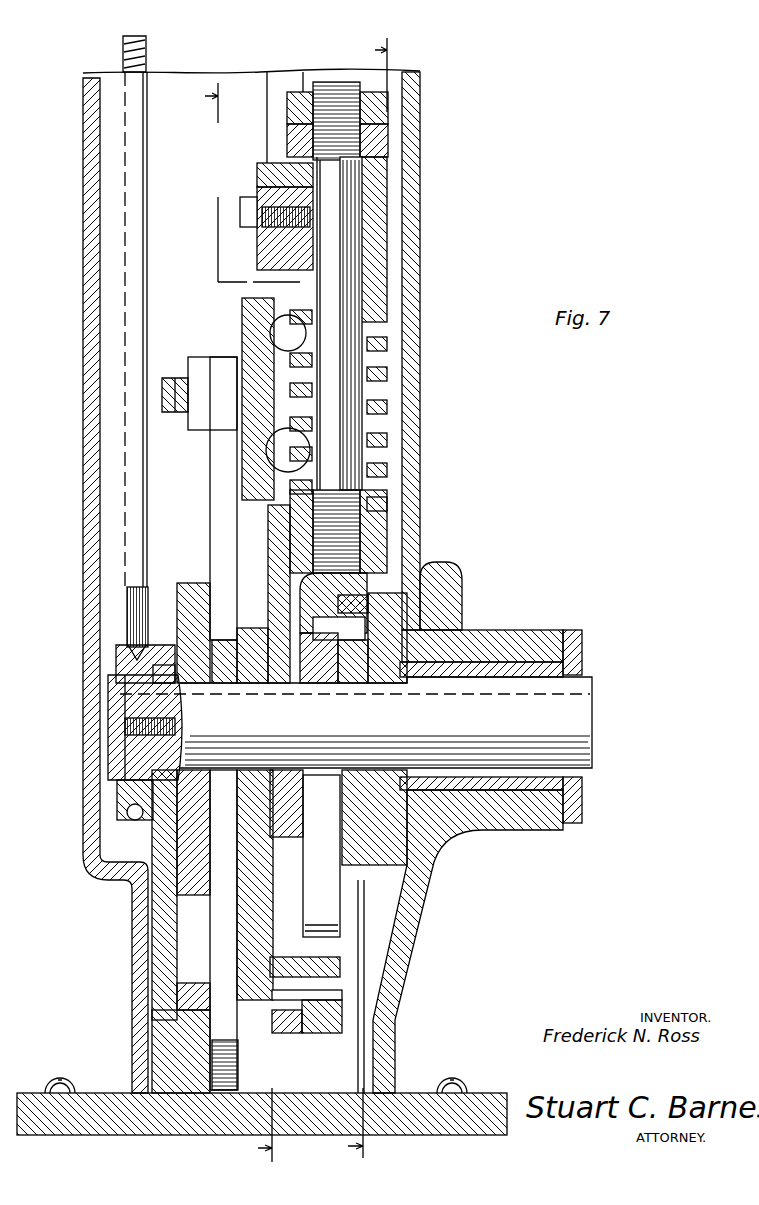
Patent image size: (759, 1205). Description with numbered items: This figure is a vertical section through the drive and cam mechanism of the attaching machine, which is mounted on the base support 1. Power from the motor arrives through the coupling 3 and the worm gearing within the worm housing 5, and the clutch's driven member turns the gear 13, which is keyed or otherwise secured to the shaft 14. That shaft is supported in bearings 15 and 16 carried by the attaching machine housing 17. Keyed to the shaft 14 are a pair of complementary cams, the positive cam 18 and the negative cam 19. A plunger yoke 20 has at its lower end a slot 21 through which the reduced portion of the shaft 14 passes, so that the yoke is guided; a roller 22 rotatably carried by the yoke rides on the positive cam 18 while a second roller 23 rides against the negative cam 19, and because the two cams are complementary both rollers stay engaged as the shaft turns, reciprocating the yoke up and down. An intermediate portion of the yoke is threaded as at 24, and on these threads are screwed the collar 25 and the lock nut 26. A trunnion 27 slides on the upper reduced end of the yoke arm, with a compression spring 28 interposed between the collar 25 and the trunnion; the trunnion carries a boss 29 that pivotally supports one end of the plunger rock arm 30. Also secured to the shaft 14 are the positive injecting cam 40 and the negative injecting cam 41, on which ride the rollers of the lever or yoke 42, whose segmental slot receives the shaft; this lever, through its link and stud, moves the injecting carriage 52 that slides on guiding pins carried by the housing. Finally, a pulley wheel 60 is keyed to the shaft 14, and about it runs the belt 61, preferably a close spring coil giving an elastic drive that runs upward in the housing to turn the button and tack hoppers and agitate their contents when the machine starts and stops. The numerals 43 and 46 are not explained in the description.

The base support 1 is at (485, 1091).
The coupling 3 is at (379, 599).
The worm housing 5 is at (252, 622).
The gear 13 is at (438, 882).
The shaft 14 is at (565, 720).
The bearing 15 is at (478, 646).
The bearing 16 is at (160, 663).
The attaching machine housing 17 is at (422, 137).
The positive cam 18 is at (450, 592).
The negative cam 19 is at (287, 918).
The plunger yoke 20 is at (345, 433).
The slot 21 is at (332, 908).
The roller 22 is at (373, 594).
The roller 23 is at (292, 1020).
The threaded portion 24 is at (395, 522).
The collar 25 is at (395, 508).
The lock nut 26 is at (390, 547).
The trunnion 27 is at (380, 224).
The compression spring 28 is at (385, 341).
The boss 29 is at (262, 206).
The plunger rock arm 30 is at (268, 165).
The positive injecting cam 40 is at (253, 628).
The negative injecting cam 41 is at (195, 583).
The lever or yoke 42 is at (150, 963).
The lever end 43 is at (270, 1108).
The lever 46 is at (212, 467).
The injecting carriage 52 is at (242, 313).
The pulley wheel 60 is at (118, 665).
The belt 61 is at (135, 502).